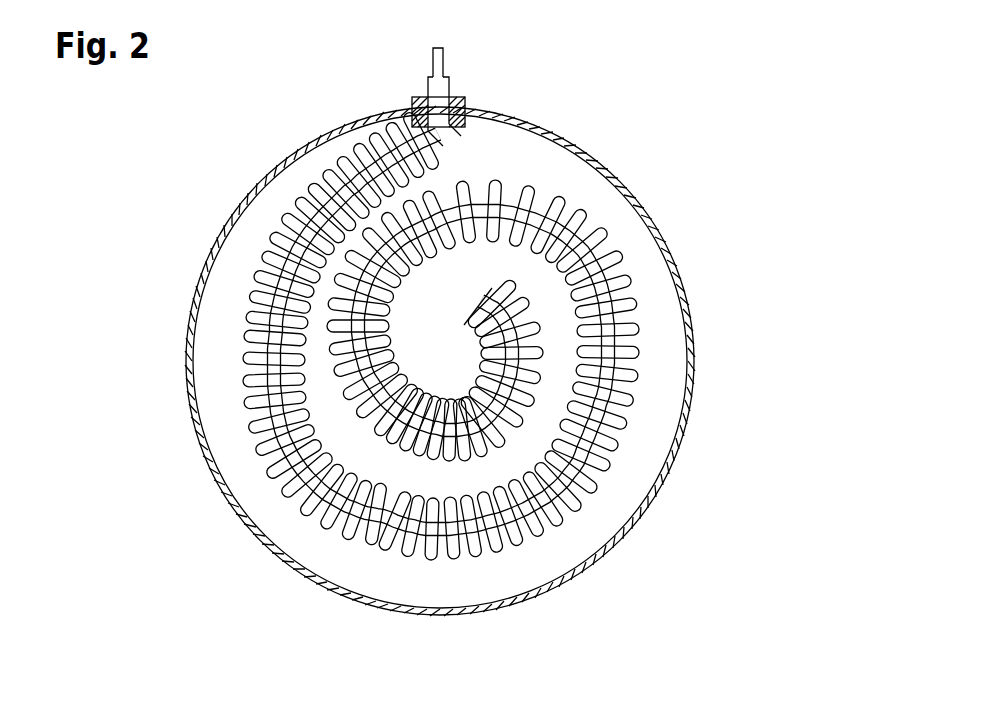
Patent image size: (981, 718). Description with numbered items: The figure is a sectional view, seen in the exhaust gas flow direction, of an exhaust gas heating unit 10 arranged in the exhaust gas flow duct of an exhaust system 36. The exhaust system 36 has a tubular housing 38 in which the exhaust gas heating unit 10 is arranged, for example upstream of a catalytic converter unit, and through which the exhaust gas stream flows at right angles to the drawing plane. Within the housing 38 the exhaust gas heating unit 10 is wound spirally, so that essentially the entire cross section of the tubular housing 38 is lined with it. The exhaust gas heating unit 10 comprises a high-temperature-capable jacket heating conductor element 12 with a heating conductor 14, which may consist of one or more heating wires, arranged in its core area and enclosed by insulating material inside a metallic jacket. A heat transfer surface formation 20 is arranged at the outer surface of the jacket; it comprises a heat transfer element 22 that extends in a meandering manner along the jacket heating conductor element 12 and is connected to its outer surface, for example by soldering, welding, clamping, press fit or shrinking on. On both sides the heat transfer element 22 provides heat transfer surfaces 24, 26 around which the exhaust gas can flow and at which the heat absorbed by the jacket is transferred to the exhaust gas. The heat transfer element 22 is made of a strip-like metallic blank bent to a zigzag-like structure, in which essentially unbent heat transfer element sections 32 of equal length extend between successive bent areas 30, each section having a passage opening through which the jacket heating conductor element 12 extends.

The exhaust gas heating unit 10 is at (509, 120).
The jacket heating conductor element 12 is at (448, 86).
The heating conductor 14 is at (433, 62).
The heat transfer surface formation 20 is at (396, 556).
The heat transfer element 22 is at (284, 472).
The heat transfer surface 24 is at (513, 535).
The heat transfer surface 26 is at (523, 532).
The bent area 30 is at (242, 362).
The heat transfer element section 32 is at (248, 355).
The exhaust system 36 is at (623, 140).
The tubular housing 38 is at (693, 333).